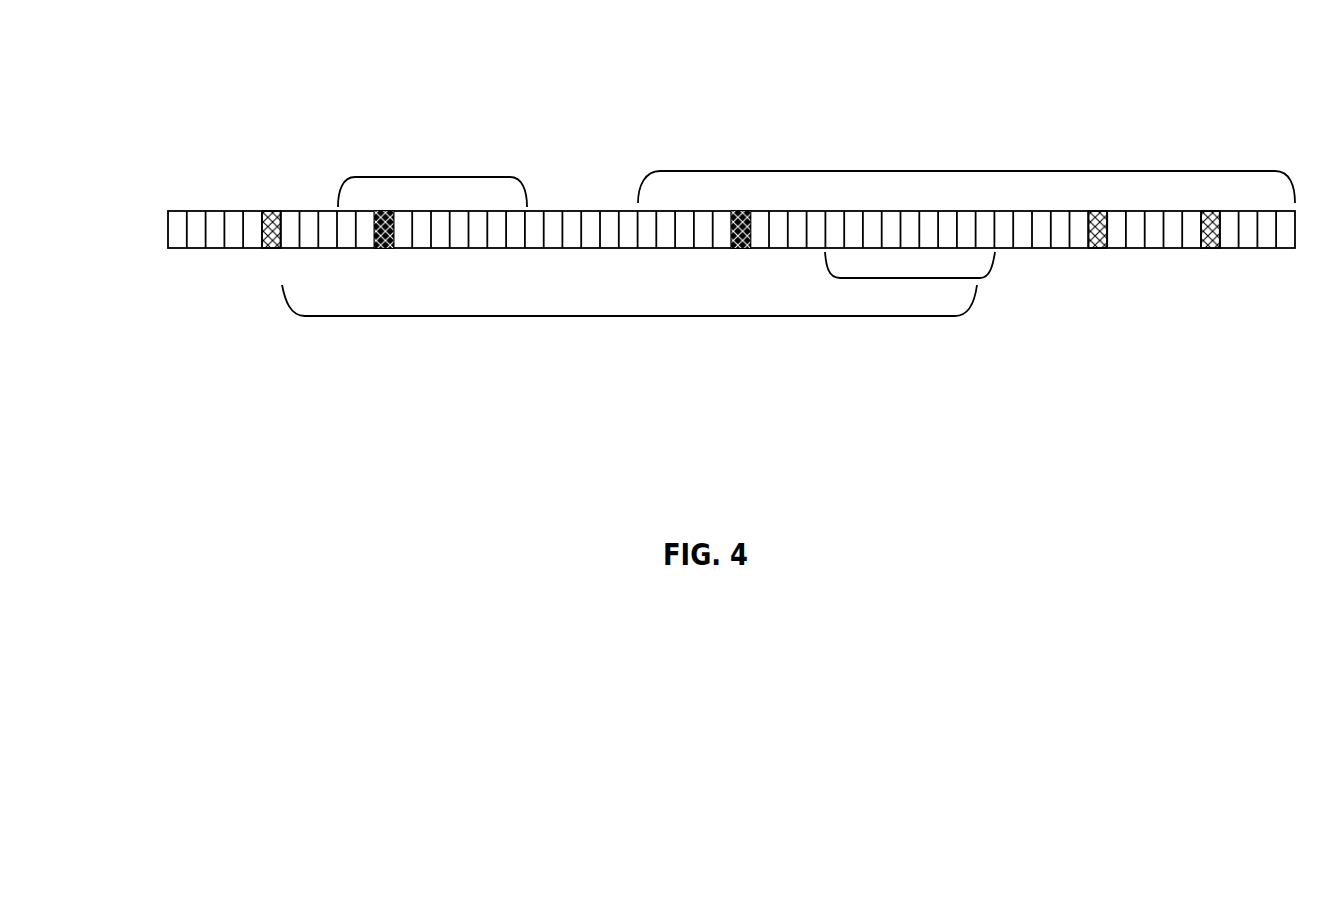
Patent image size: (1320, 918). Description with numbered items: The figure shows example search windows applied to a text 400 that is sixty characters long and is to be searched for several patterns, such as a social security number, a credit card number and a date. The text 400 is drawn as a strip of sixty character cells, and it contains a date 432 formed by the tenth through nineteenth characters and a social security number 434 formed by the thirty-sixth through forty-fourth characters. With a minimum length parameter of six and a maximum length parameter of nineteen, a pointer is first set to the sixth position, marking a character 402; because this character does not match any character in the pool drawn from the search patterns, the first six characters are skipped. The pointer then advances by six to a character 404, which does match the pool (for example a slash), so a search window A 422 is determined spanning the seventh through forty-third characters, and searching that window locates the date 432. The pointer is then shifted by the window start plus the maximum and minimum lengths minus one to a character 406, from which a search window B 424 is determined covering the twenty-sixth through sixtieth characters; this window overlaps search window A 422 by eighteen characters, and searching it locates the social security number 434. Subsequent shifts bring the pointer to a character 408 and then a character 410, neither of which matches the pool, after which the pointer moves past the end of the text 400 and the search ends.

The text 400 is at (150, 240).
The character 402 is at (272, 212).
The character 404 is at (385, 212).
The character 406 is at (742, 212).
The character 408 is at (1099, 212).
The character 410 is at (1211, 212).
The search window A 422 is at (628, 316).
The search window B 424 is at (967, 171).
The date 432 is at (432, 177).
The social security number 434 is at (910, 278).